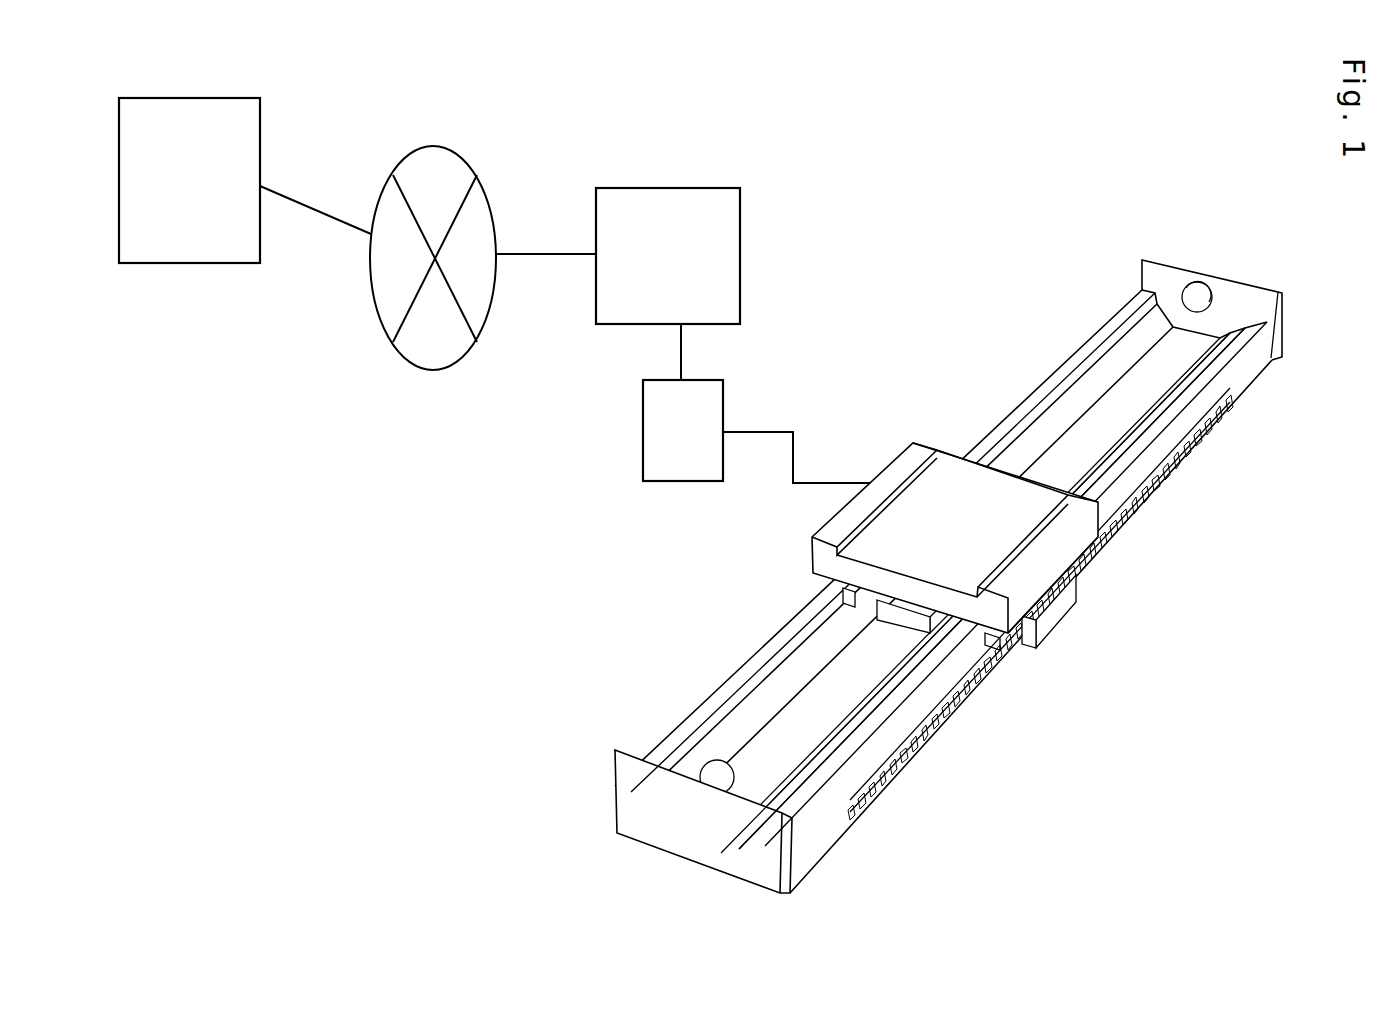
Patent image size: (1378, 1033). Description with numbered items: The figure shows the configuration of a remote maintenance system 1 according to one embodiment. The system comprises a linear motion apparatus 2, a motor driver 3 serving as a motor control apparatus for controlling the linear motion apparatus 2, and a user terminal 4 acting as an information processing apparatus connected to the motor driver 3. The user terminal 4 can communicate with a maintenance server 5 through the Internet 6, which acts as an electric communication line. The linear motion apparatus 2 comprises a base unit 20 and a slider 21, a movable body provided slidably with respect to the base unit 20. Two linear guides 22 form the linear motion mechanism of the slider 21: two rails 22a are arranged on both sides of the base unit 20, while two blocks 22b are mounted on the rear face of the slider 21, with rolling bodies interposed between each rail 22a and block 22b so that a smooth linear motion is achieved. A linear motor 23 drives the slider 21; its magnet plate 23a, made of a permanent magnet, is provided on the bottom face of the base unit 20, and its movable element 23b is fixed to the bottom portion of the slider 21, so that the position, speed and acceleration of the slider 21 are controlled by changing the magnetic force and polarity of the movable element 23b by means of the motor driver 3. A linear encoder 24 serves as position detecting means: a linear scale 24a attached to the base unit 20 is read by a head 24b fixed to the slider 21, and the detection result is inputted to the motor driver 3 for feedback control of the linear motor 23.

The remote maintenance system 1 is at (943, 200).
The linear motion apparatus 2 is at (996, 268).
The motor driver 3 is at (713, 388).
The user terminal 4 is at (740, 262).
The maintenance server 5 is at (185, 263).
The Internet 6 is at (453, 150).
The base unit 20 is at (1087, 390).
The slider 21 is at (903, 463).
The linear guide 22 is at (949, 571).
The rail 22a is at (787, 630).
The block 22b is at (827, 583).
The linear motor 23 is at (983, 590).
The magnet plate 23a is at (907, 617).
The movable element 23b is at (942, 650).
The linear encoder 24 is at (1056, 604).
The linear scale 24a is at (1128, 503).
The head 24b is at (1068, 588).